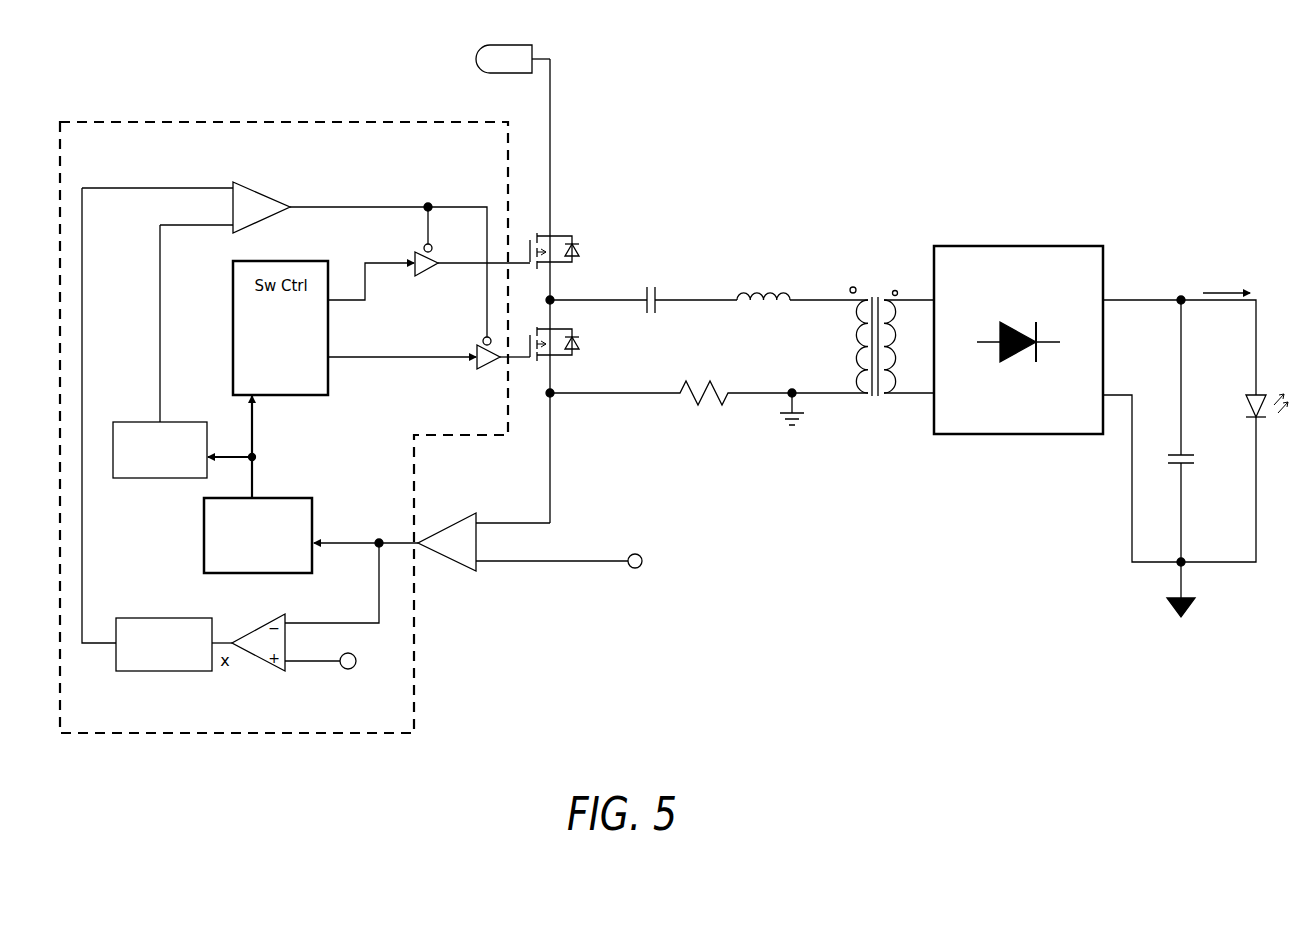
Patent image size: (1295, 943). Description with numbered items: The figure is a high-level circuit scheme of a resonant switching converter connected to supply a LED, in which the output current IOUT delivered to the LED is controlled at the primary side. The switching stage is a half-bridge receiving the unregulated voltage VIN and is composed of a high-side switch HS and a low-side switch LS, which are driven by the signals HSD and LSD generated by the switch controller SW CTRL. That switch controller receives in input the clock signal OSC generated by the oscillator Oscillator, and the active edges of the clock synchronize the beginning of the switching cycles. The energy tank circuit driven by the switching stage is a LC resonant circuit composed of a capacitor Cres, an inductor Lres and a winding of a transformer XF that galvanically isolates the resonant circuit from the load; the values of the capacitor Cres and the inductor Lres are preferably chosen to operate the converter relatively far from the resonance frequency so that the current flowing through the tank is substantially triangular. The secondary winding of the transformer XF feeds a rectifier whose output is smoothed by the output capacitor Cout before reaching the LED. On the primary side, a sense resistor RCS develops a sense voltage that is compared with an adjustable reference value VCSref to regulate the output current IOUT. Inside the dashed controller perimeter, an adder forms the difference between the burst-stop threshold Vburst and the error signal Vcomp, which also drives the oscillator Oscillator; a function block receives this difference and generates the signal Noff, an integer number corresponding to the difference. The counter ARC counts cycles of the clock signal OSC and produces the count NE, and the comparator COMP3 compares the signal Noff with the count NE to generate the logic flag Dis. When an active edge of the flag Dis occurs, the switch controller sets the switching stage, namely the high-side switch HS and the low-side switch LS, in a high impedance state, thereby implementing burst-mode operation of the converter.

The comparator COMP3 is at (255, 194).
The signal Noff is at (155, 175).
The NE signal input NE is at (143, 214).
The flag Dis is at (388, 258).
The high-side drive signal HSD is at (353, 287).
The low-side drive signal LSD is at (386, 359).
The clock signal OSC is at (245, 404).
The counter ARC is at (184, 450).
The oscillator Oscillator is at (258, 515).
The error signal Vcomp is at (351, 568).
The reference voltage VCSref is at (564, 576).
The burst-stop threshold Vburst is at (336, 683).
The unregulated voltage VIN is at (513, 59).
The high-side switch HS is at (571, 251).
The low-side switch LS is at (569, 344).
The capacitor Cres is at (643, 287).
The inductor Lres is at (802, 279).
The sense resistor RCS is at (709, 384).
The transformer XF is at (892, 332).
The output current IOUT is at (1180, 331).
The output capacitor Cout is at (1205, 431).